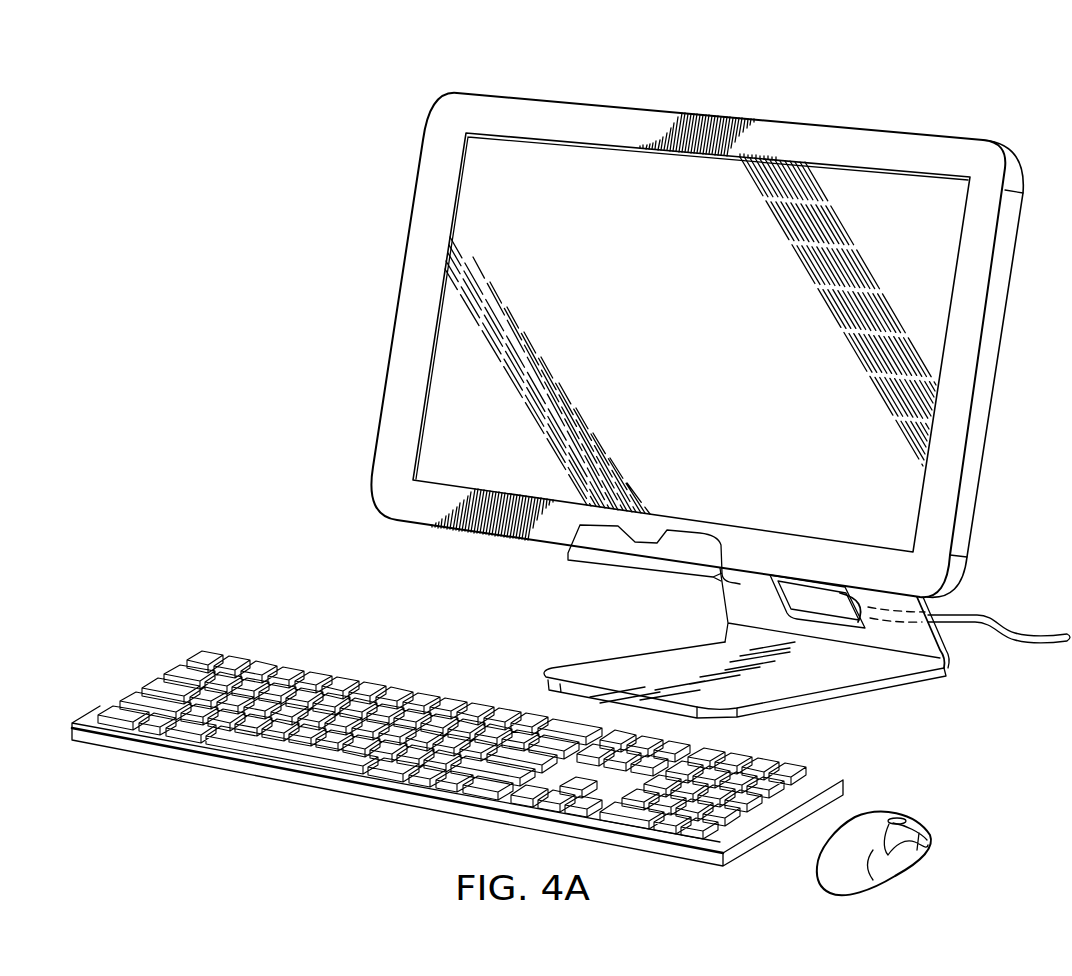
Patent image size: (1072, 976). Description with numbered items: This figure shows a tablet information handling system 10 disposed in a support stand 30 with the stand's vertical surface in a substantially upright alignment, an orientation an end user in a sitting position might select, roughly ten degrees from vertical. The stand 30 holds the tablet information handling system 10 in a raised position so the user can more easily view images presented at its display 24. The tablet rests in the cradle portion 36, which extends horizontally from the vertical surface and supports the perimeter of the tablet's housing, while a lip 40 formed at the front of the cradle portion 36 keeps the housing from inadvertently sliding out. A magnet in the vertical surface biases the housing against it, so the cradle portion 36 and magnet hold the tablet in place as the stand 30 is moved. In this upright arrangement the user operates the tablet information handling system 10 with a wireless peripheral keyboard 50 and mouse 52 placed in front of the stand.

The tablet information handling system 10 is at (402, 279).
The display 24 is at (573, 165).
The support stand 30 is at (778, 689).
The cradle portion 36 is at (724, 573).
The lip 40 is at (600, 546).
The wireless peripheral keyboard 50 is at (408, 793).
The mouse 52 is at (920, 816).